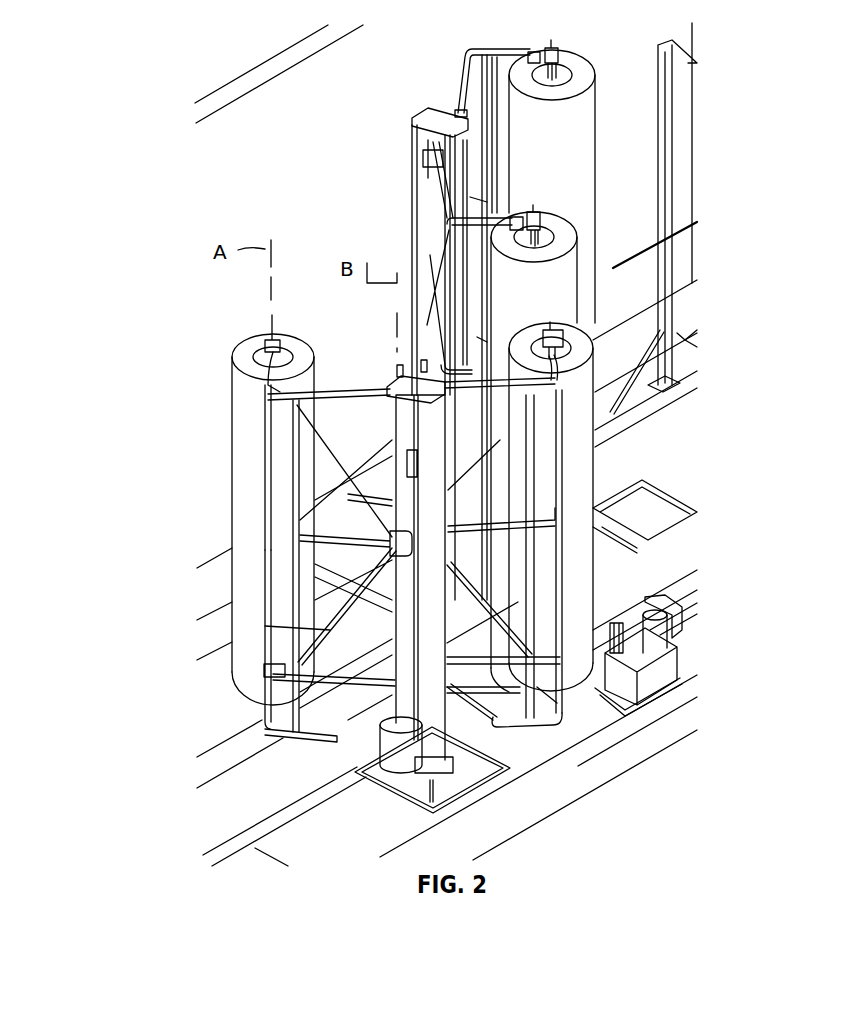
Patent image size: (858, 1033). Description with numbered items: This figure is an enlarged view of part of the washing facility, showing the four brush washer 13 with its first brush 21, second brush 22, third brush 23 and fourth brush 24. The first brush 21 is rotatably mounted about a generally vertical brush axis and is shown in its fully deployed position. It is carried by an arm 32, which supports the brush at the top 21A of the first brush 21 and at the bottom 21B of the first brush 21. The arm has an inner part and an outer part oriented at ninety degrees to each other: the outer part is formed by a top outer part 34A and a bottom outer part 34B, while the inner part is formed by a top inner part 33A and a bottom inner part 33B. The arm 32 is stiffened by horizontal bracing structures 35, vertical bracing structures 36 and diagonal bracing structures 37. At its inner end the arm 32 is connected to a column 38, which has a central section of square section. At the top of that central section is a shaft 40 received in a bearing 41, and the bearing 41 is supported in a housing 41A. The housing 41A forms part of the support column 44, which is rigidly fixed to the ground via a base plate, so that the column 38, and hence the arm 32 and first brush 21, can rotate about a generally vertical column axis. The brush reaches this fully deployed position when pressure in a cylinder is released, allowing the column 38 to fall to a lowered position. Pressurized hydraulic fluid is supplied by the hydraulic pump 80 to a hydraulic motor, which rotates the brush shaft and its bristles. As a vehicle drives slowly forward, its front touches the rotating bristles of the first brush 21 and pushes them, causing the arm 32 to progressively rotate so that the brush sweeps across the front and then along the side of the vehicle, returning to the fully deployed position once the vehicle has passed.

The four brush washer 13 is at (351, 141).
The first brush 21 is at (240, 392).
The top of the first brush 21A is at (257, 360).
The bottom of the first brush 21B is at (243, 692).
The second brush 22 is at (578, 472).
The third brush 23 is at (557, 270).
The fourth brush 24 is at (578, 105).
The arm 32 is at (283, 398).
The top inner part 33A is at (333, 396).
The bottom inner part 33B is at (343, 740).
The top outer part 34A is at (262, 381).
The bottom outer part 34B is at (283, 722).
The horizontal bracing structures 35 is at (320, 553).
The vertical bracing structures 36 is at (297, 487).
The diagonal bracing structures 37 is at (380, 490).
The column 38 is at (400, 447).
The shaft 40 is at (400, 380).
The bearing 41 is at (398, 383).
The housing 41A is at (408, 400).
The support column 44 is at (440, 741).
The hydraulic pump 80 is at (657, 677).